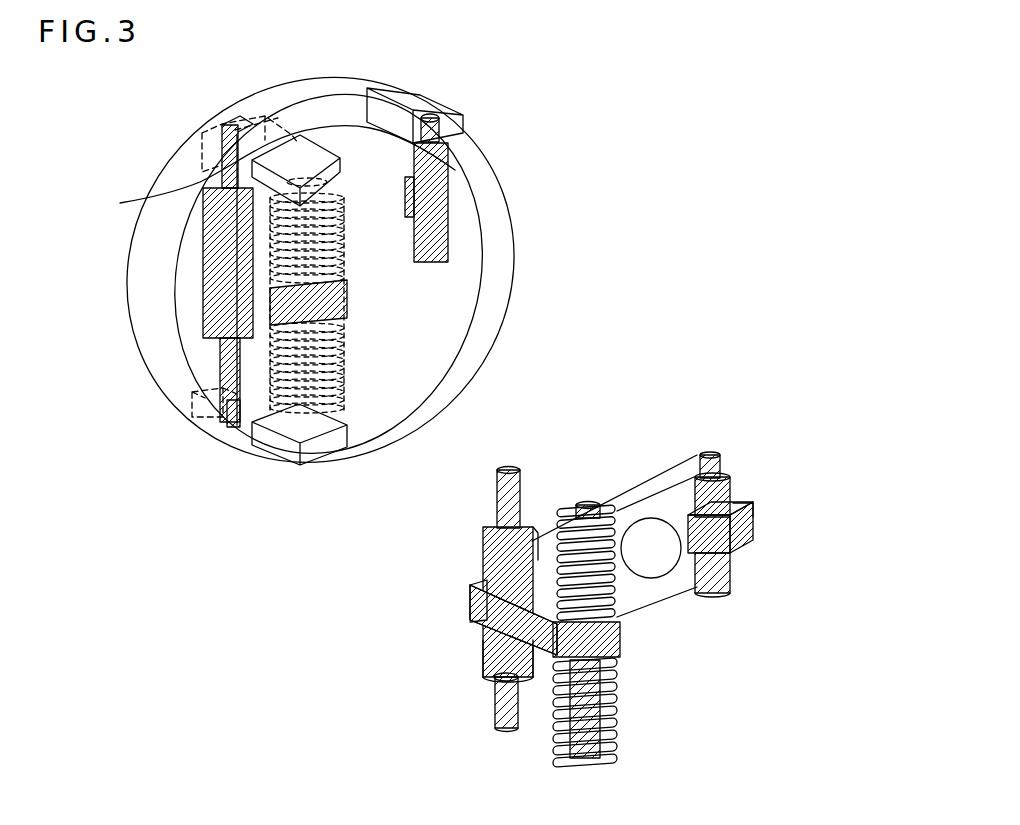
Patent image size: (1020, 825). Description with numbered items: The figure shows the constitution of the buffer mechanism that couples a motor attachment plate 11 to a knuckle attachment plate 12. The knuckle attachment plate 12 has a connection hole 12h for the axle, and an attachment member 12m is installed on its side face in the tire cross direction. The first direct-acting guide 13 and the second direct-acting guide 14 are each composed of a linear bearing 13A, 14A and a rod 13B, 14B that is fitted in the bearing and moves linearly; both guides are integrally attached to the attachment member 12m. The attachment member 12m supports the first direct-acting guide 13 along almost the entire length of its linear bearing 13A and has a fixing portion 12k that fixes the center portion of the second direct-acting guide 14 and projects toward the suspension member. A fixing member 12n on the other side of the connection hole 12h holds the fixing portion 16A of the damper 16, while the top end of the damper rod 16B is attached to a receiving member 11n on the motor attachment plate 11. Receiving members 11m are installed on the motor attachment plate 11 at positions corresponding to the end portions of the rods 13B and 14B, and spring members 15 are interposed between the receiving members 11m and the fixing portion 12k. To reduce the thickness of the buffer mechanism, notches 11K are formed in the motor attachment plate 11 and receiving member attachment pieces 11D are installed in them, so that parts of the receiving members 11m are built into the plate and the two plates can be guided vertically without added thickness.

The motor attachment plate 11 is at (497, 232).
The receiving member attachment piece 11D is at (253, 110).
The notch 11K is at (257, 93).
The receiving member 11m is at (160, 197).
The receiving member for the damper 11n is at (440, 104).
The knuckle attachment plate 12 is at (657, 473).
The connection hole 12h is at (647, 557).
The fixing portion 12k is at (493, 677).
The attachment member 12m is at (470, 600).
The fixing member 12n is at (753, 503).
The first direct-acting guide 13 is at (490, 580).
The linear bearing 13A is at (487, 652).
The rod 13B is at (493, 503).
The second direct-acting guide 14 is at (620, 600).
The linear bearing 14A is at (618, 688).
The rod 14B is at (580, 503).
The spring member 15 is at (626, 507).
The damper 16 is at (737, 483).
The fixing portion 16A is at (730, 574).
The rod 16B is at (717, 452).